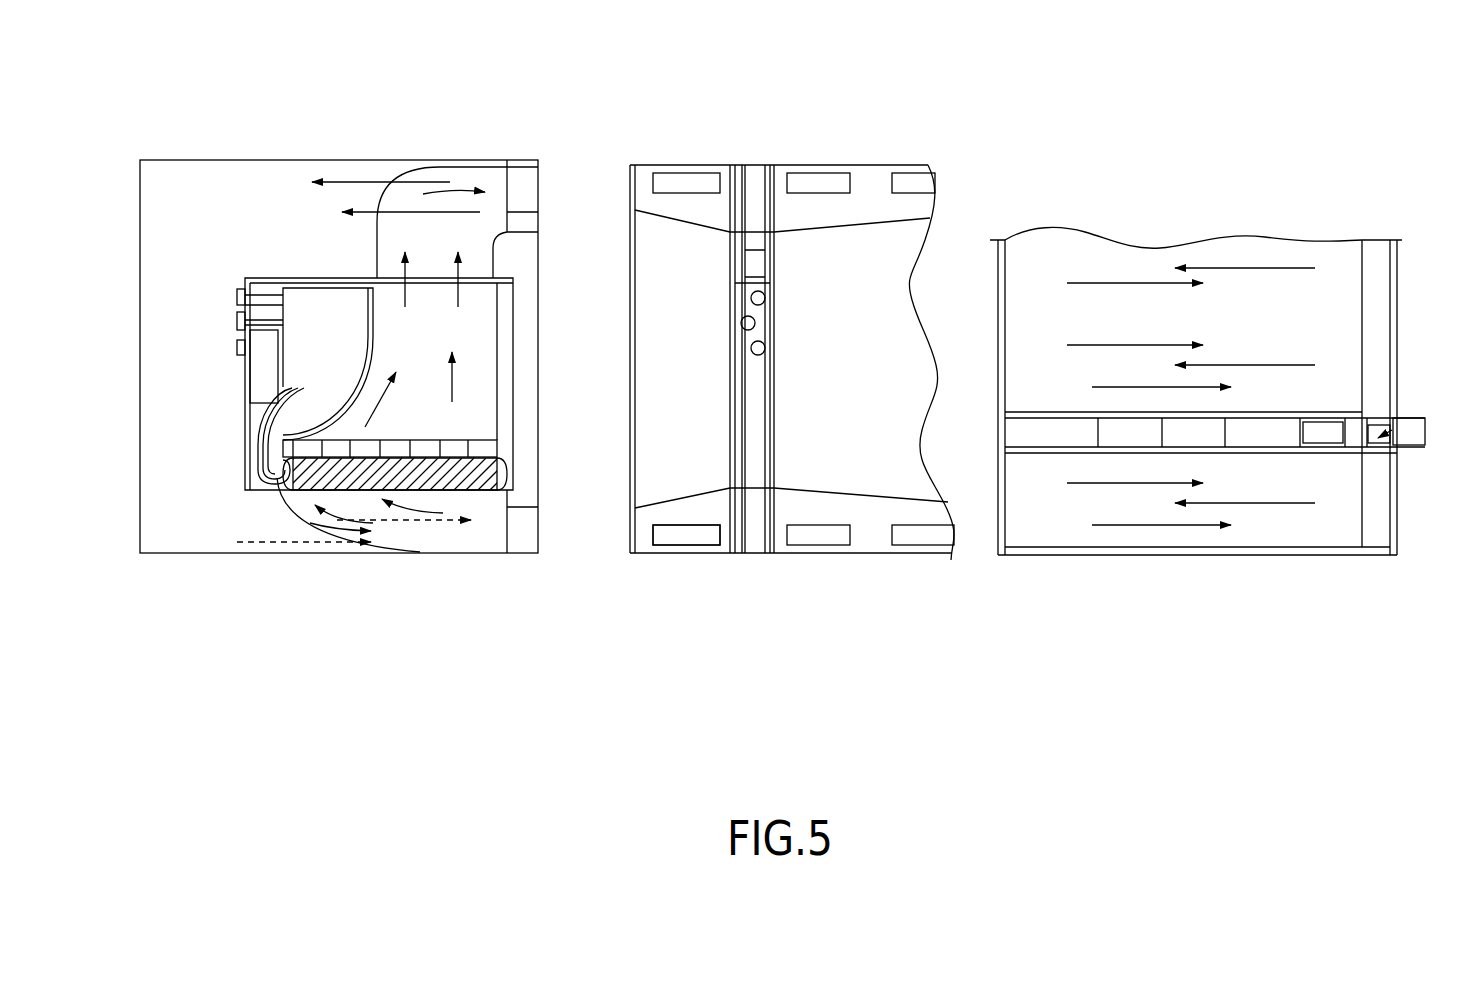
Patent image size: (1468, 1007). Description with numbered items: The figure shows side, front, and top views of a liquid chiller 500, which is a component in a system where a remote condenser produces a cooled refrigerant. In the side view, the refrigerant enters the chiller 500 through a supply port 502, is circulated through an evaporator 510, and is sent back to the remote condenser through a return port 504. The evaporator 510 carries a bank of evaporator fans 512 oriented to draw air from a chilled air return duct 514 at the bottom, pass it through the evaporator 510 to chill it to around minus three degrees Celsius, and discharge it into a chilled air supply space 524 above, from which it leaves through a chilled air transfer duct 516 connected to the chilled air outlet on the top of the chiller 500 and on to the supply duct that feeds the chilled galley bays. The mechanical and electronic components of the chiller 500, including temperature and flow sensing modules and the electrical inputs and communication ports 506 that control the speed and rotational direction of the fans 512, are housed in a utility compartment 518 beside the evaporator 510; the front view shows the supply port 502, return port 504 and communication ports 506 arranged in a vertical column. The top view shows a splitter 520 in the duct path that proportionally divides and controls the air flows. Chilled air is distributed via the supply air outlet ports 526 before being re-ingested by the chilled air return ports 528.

The liquid chiller 500 is at (187, 77).
The supply port 502 is at (237, 297).
The return port 504 is at (237, 323).
The communication ports 506 is at (237, 347).
The evaporator 510 is at (310, 473).
The evaporator fans 512 is at (480, 447).
The chilled air return duct 514 is at (478, 533).
The chilled air transfer duct 516 is at (462, 183).
The utility compartment 518 is at (303, 298).
The splitter 520 is at (1390, 447).
The chilled air supply space 524 is at (482, 317).
The supply air outlet ports 526 is at (818, 183).
The chilled air return ports 528 is at (685, 537).